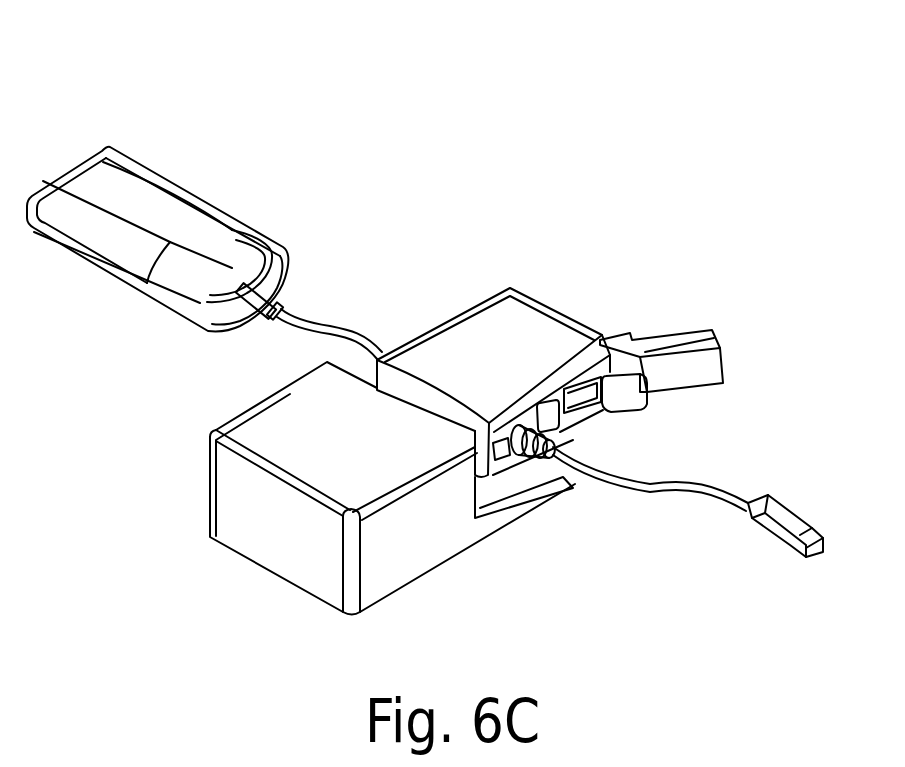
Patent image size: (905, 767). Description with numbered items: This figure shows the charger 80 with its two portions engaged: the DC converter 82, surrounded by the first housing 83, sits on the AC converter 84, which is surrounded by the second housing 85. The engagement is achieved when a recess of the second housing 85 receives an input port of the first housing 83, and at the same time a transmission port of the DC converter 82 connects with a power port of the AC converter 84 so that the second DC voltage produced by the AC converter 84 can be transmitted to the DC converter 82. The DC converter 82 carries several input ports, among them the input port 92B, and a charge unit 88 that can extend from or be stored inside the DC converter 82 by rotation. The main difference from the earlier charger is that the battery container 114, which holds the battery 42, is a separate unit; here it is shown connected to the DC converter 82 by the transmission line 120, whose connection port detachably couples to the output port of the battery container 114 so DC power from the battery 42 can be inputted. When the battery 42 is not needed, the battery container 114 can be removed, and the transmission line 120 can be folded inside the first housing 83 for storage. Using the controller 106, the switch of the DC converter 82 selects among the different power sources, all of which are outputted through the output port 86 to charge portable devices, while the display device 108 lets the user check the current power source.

The charger 80 is at (436, 106).
The battery 42 is at (143, 190).
The battery container 114 is at (173, 290).
The transmission line 120 is at (310, 332).
The DC converter 82 is at (465, 324).
The first housing 83 is at (500, 307).
The AC converter 84 is at (217, 490).
The second housing 85 is at (407, 563).
The output port 86 is at (810, 527).
The charge unit 88 is at (687, 383).
The input port 92B is at (752, 338).
The controller 106 is at (524, 467).
The display device 108 is at (558, 434).